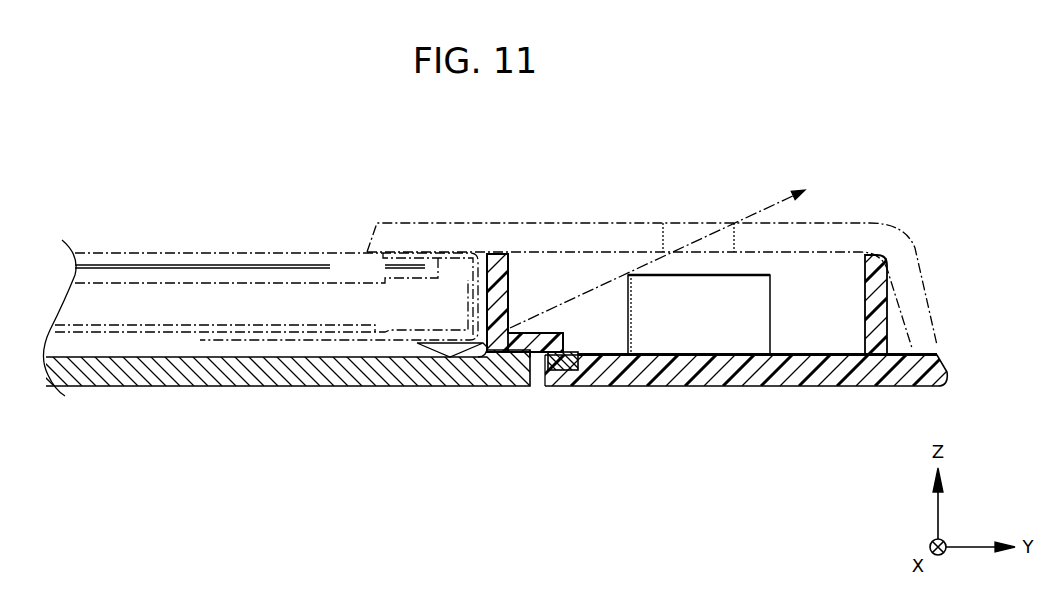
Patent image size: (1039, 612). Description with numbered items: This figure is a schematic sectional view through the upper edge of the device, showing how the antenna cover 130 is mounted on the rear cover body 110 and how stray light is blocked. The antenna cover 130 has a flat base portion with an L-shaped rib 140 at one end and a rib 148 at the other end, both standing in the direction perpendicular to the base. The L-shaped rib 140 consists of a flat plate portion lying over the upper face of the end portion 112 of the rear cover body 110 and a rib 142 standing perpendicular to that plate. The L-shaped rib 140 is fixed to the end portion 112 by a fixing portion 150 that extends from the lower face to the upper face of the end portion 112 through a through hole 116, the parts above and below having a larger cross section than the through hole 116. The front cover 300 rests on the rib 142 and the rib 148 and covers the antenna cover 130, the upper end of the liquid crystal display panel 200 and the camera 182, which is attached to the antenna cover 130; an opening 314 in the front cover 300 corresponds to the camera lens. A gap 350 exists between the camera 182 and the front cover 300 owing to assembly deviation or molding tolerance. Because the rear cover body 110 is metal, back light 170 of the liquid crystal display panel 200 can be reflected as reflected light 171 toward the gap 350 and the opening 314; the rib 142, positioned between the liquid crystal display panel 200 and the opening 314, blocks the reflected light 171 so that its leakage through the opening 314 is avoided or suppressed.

The rear cover body 110 is at (229, 376).
The end portion 112 is at (560, 362).
The through hole 116 is at (527, 375).
The antenna cover 130 is at (791, 377).
The L-shaped rib 140 is at (518, 306).
The rib 142 is at (500, 268).
The rib 148 is at (873, 292).
The fixing portion 150 is at (532, 340).
The back light 170 is at (431, 347).
The reflected light 171 is at (753, 212).
The camera 182 is at (704, 332).
The liquid crystal display panel 200 is at (232, 292).
The front cover 300 is at (790, 238).
The opening 314 is at (700, 226).
The gap 350 is at (758, 267).